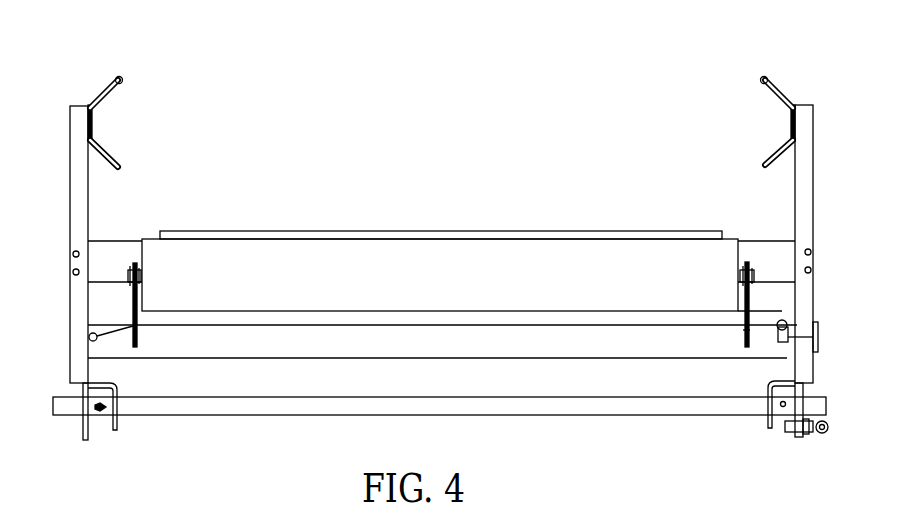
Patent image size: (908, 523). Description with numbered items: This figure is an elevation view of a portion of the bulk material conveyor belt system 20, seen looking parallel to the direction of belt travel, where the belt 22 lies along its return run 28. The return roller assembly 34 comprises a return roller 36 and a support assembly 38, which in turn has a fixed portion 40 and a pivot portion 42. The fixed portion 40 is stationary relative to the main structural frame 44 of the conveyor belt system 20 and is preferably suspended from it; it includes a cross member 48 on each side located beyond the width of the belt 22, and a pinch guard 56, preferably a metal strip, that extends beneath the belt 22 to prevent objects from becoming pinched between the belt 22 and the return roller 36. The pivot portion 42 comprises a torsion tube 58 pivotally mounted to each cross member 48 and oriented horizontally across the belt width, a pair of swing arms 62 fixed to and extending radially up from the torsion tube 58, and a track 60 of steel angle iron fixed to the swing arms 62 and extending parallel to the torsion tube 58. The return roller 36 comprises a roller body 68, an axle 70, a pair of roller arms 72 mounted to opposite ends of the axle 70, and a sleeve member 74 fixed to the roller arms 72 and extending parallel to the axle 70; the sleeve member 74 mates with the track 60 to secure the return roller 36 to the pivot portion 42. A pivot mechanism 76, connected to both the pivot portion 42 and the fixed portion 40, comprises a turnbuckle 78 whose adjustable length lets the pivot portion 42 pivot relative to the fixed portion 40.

The bulk material conveyor belt system 20 is at (471, 74).
The belt 22 is at (441, 184).
The return run 28 is at (318, 232).
The return roller assembly 34 is at (803, 200).
The return roller 36 is at (440, 220).
The support assembly 38 is at (76, 289).
The fixed portion 40 is at (777, 310).
The pivot portion 42 is at (197, 347).
The main structural frame 44 is at (107, 152).
The cross member 48 is at (768, 426).
The pinch guard 56 is at (748, 253).
The torsion tube 58 is at (283, 403).
The track 60 is at (775, 340).
The swing arms 62 is at (79, 430).
The roller body 68 is at (197, 258).
The axle 70 is at (750, 275).
The roller arms 72 is at (89, 337).
The sleeve member 74 is at (567, 337).
The pivot mechanism 76 is at (808, 456).
The turnbuckle 78 is at (820, 433).